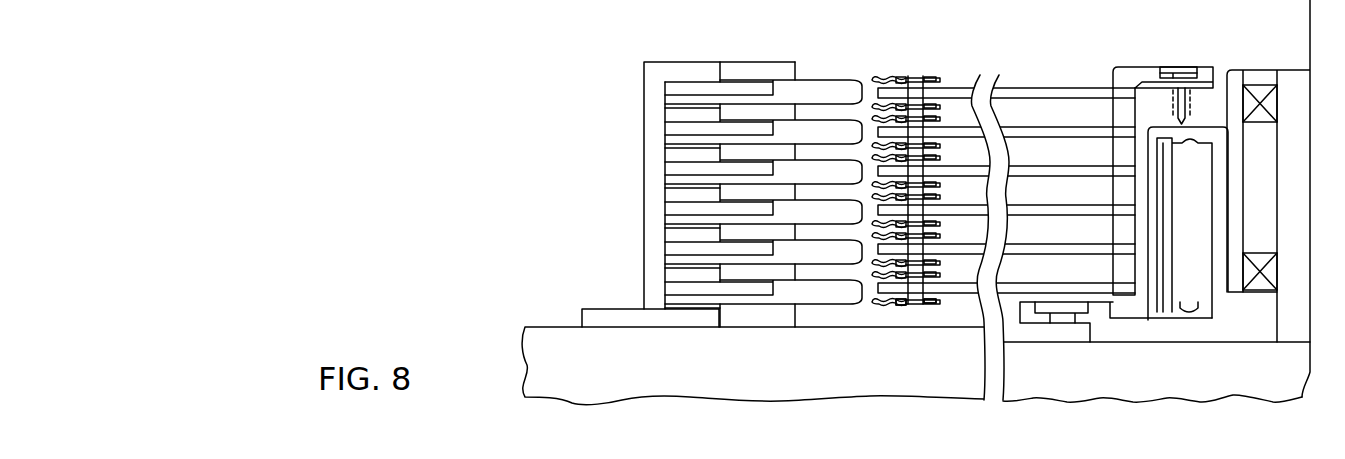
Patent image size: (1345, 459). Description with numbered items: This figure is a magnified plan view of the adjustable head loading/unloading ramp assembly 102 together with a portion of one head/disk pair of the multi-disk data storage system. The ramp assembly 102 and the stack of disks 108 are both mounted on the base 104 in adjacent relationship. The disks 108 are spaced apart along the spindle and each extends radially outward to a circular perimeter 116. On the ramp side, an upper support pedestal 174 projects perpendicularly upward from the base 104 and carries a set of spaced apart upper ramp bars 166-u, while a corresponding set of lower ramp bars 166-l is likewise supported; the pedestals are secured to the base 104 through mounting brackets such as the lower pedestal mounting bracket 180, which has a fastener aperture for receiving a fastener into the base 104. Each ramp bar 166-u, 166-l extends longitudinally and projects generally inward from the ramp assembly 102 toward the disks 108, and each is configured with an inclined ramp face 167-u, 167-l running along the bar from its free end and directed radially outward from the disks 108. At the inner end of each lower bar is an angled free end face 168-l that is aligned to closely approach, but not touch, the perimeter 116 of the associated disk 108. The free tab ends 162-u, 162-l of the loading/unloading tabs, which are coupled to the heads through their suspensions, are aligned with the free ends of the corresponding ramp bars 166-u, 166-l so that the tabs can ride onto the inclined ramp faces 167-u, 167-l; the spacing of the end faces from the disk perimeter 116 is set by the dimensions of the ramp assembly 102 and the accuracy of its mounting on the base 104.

The ramp assembly 102 is at (600, 142).
The base 104 is at (603, 382).
The disks 108 is at (980, 75).
The circular perimeter 116 is at (878, 306).
The upper free tab end 162-u is at (893, 78).
The lower free tab end 162-l is at (880, 312).
The upper ramp bar 166-u is at (813, 80).
The lower ramp bar 166-l is at (785, 297).
The upper inclined ramp face 167-u is at (861, 80).
The lower inclined ramp face 167-l is at (874, 80).
The lower free end face 168-l is at (852, 294).
The upper support pedestal 174 is at (644, 62).
The lower pedestal mounting bracket 180 is at (582, 309).